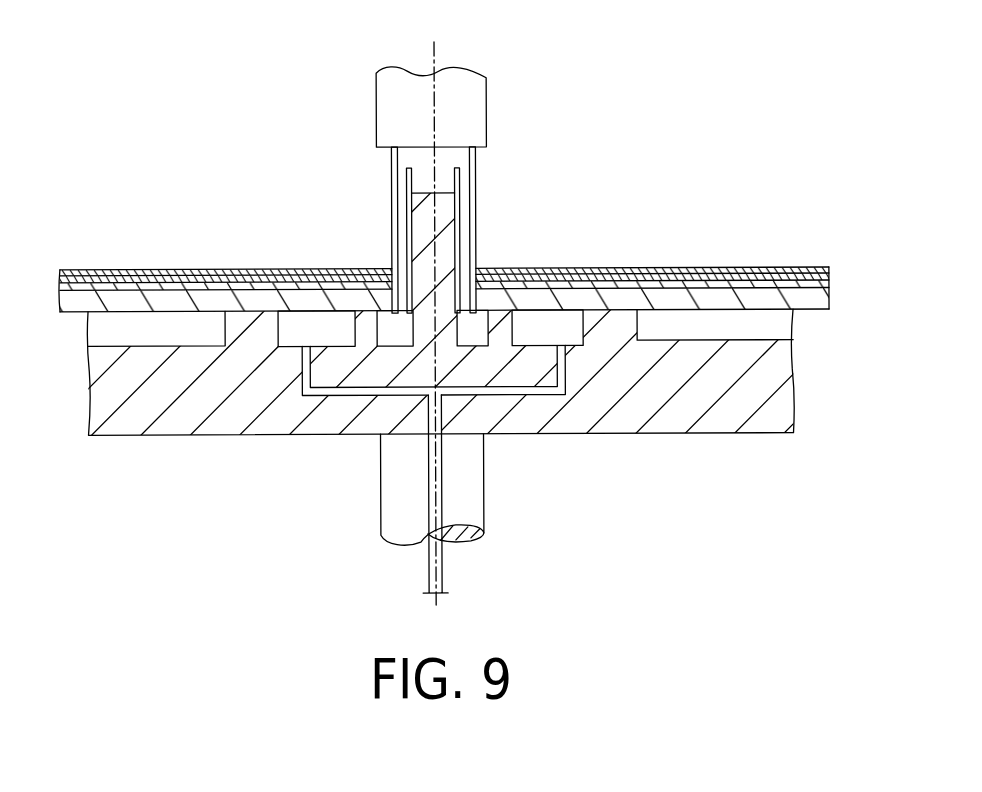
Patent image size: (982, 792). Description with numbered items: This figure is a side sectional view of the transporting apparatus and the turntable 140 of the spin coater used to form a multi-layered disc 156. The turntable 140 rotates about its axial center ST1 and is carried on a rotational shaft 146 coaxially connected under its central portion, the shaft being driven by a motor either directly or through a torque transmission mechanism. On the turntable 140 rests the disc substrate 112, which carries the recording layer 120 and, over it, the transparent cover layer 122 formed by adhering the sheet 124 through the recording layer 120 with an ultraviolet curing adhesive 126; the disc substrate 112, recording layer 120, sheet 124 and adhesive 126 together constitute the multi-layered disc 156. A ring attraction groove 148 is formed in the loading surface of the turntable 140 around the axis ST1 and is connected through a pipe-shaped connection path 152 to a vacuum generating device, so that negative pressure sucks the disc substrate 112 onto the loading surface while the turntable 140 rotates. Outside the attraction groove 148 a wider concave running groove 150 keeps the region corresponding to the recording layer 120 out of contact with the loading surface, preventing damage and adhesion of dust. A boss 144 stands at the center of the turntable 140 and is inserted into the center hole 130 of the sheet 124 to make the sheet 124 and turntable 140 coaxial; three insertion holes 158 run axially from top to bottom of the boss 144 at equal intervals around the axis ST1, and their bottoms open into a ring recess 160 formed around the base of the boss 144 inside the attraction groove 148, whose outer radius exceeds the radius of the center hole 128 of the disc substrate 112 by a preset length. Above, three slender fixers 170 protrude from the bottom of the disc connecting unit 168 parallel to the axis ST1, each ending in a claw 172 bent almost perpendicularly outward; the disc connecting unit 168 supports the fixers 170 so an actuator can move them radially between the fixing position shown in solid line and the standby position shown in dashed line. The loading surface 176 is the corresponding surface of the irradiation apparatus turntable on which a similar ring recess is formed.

The disc substrate 112 is at (829, 297).
The recording layer 120 is at (831, 270).
The cover layer 122 is at (423, 230).
The sheet 124 is at (90, 273).
The ultraviolet curing adhesive 126 is at (60, 276).
The center hole of the disc substrate 128 is at (468, 274).
The center hole of the sheet 130 is at (398, 273).
The turntable 140 is at (795, 408).
The boss 144 is at (440, 193).
The rotational shaft 146 is at (485, 512).
The attraction groove 148 is at (482, 336).
The running groove 150 is at (795, 338).
The channel 152 is at (547, 397).
The multi-layered disc 156 is at (833, 253).
The insertion holes 158 is at (413, 222).
The recess 160 is at (387, 348).
The disc connecting unit 168 is at (377, 101).
The fixers 170 is at (393, 168).
The claw 172 is at (380, 326).
The loading surface 176 is at (612, 268).
The axial center ST1 is at (437, 62).